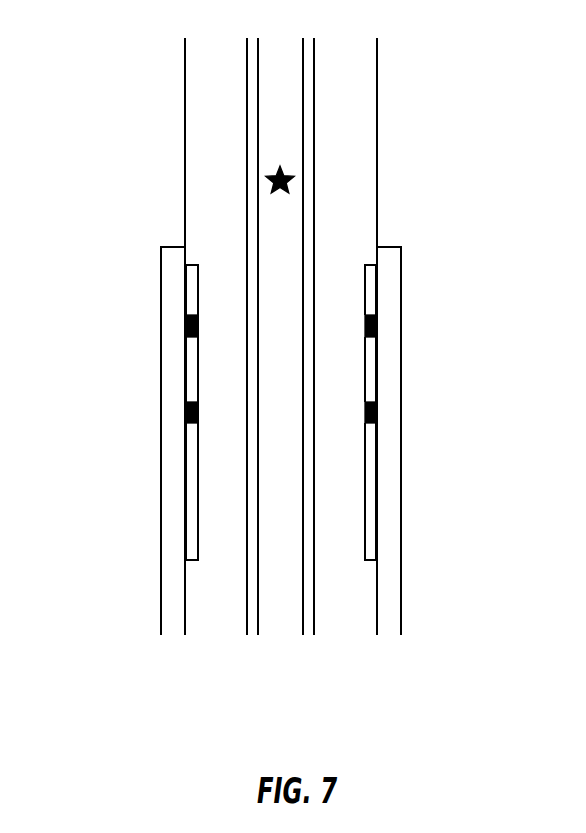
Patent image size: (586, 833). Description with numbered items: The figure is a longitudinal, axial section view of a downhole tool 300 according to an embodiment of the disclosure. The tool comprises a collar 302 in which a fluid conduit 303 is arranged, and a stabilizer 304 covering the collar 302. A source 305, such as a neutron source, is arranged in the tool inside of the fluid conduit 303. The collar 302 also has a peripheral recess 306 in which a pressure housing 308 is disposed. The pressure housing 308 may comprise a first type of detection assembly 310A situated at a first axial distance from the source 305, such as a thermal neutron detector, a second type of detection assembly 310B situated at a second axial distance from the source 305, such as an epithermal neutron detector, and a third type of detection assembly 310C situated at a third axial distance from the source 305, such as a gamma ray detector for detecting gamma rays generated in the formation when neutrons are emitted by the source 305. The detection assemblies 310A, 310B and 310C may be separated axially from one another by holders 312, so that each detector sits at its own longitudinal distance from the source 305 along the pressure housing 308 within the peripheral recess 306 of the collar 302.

The downhole tool 300 is at (421, 66).
The collar 302 is at (377, 158).
The fluid conduit 303 is at (254, 634).
The stabilizer 304 is at (401, 602).
The source 305 is at (262, 164).
The peripheral recess 306 is at (186, 286).
The pressure housing 308 is at (182, 488).
The first type of detection assembly 310A is at (370, 290).
The second type of detection assembly 310B is at (370, 363).
The third type of detection assembly 310C is at (370, 483).
The holders 312 is at (185, 412).